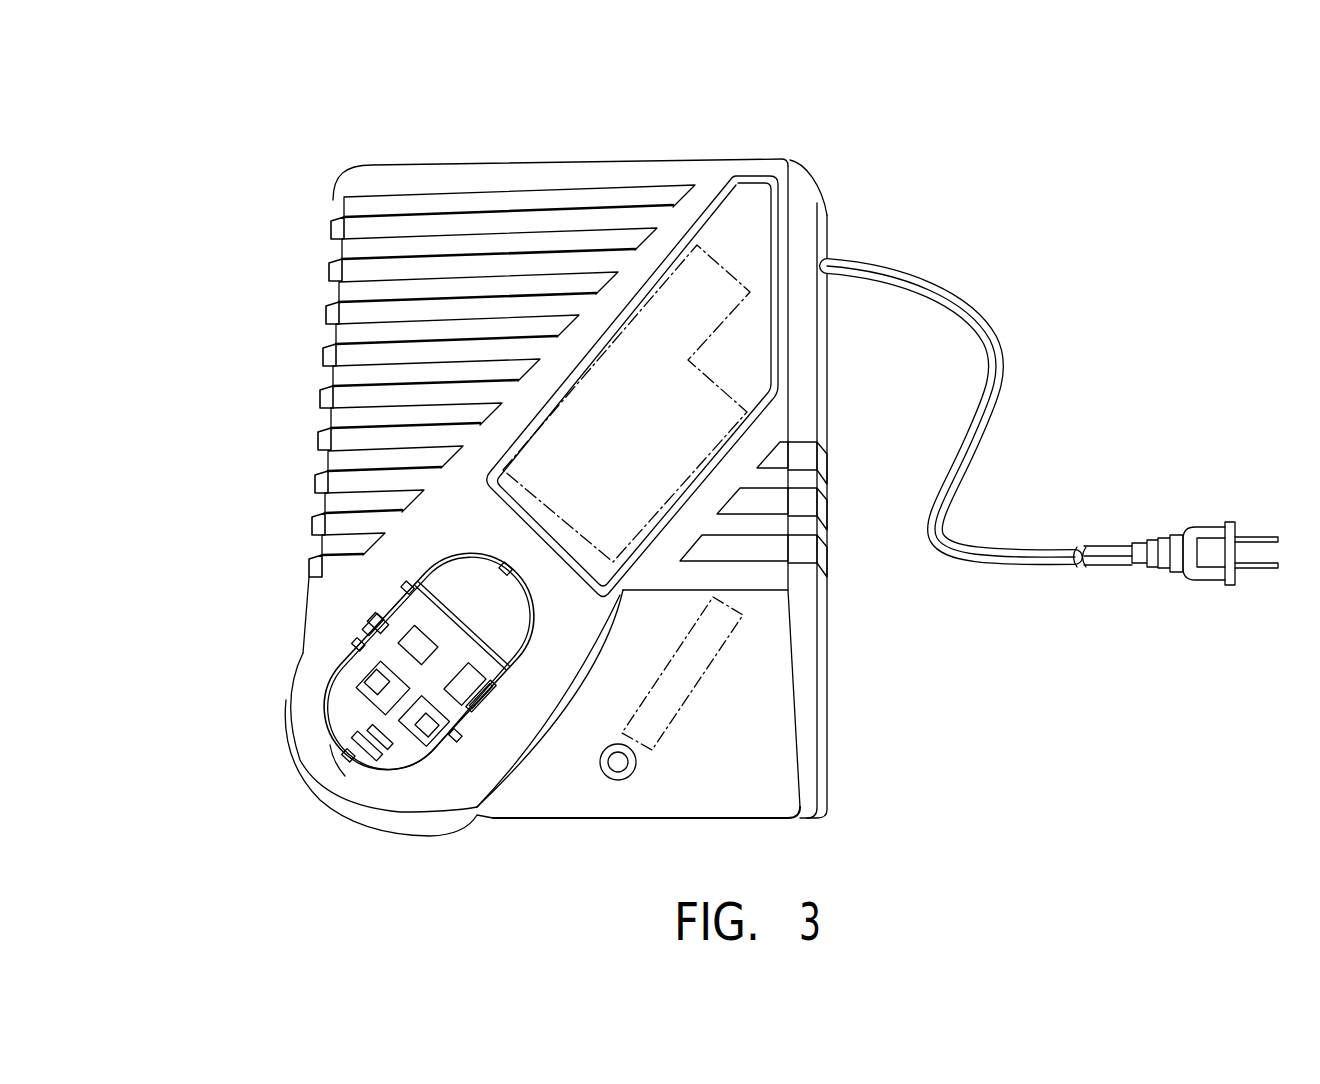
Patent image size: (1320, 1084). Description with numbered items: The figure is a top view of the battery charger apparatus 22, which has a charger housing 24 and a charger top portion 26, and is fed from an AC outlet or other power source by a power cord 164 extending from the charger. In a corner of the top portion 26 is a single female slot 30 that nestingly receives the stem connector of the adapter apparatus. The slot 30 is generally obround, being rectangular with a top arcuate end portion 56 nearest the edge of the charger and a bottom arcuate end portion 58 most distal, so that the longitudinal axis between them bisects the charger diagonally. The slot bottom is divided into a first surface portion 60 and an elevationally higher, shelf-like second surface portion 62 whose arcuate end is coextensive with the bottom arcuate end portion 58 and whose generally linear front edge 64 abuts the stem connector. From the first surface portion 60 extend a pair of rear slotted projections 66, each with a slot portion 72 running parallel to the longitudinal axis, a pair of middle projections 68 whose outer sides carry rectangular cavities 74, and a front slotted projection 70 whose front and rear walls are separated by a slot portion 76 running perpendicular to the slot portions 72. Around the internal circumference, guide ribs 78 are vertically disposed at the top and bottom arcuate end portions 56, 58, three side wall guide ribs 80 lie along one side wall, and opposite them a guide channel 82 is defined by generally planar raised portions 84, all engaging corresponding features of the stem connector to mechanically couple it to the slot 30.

The battery charger apparatus 22 is at (783, 140).
The charger housing 24 is at (806, 178).
The charger top portion 26 is at (745, 266).
The female slot 30 is at (318, 696).
The top arcuate end portion 56 is at (533, 594).
The bottom arcuate end portion 58 is at (365, 778).
The first surface portion 60 is at (488, 693).
The second surface portion 62 is at (462, 552).
The linear front edge 64 is at (467, 598).
The rear slotted projections 66 is at (372, 625).
The middle projections 68 is at (368, 686).
The front slotted projection 70 is at (362, 732).
The slot portion 72 is at (412, 637).
The rectangular cavities 74 is at (412, 748).
The slot portion 76 is at (376, 740).
The guide ribs 78 is at (510, 567).
The side wall guide ribs 80 is at (410, 622).
The guide channel 82 is at (486, 712).
The raised portions 84 is at (500, 672).
The power cord 164 is at (962, 455).